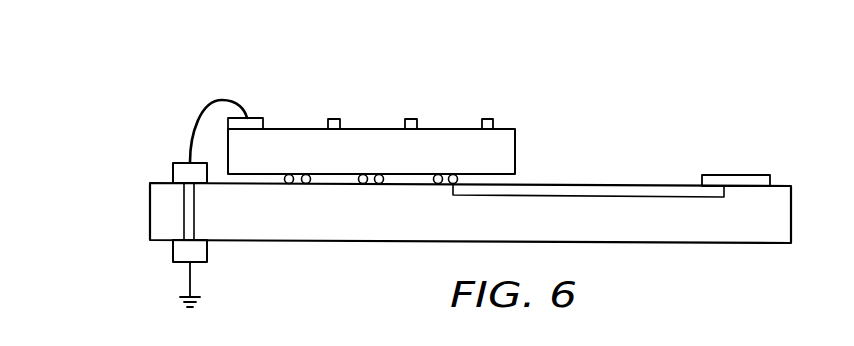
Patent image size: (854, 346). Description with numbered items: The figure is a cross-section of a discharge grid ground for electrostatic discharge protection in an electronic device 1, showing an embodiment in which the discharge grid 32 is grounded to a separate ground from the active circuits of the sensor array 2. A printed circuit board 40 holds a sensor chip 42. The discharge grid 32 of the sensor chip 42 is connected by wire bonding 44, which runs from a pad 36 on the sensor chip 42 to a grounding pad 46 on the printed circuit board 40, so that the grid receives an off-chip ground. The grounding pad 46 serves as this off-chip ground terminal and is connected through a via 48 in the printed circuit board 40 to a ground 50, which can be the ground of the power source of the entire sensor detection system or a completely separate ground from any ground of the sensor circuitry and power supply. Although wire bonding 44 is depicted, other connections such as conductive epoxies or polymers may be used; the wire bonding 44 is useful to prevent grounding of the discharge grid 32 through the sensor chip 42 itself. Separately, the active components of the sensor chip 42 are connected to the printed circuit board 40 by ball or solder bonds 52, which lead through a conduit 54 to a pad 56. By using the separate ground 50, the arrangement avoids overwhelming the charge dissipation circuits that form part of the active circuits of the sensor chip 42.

The electronic device 1 is at (72, 158).
The sensor array 2 is at (519, 54).
The discharge grid 32 is at (336, 119).
The pad 36 is at (252, 118).
The printed circuit board 40 is at (725, 243).
The sensor chip 42 is at (450, 129).
The wire bonding 44 is at (193, 128).
The grounding pad 46 is at (173, 173).
The via 48 is at (184, 210).
The ground 50 is at (188, 277).
The ball or solder bonds 52 is at (438, 185).
The conduit 54 is at (615, 198).
The pad 56 is at (733, 175).